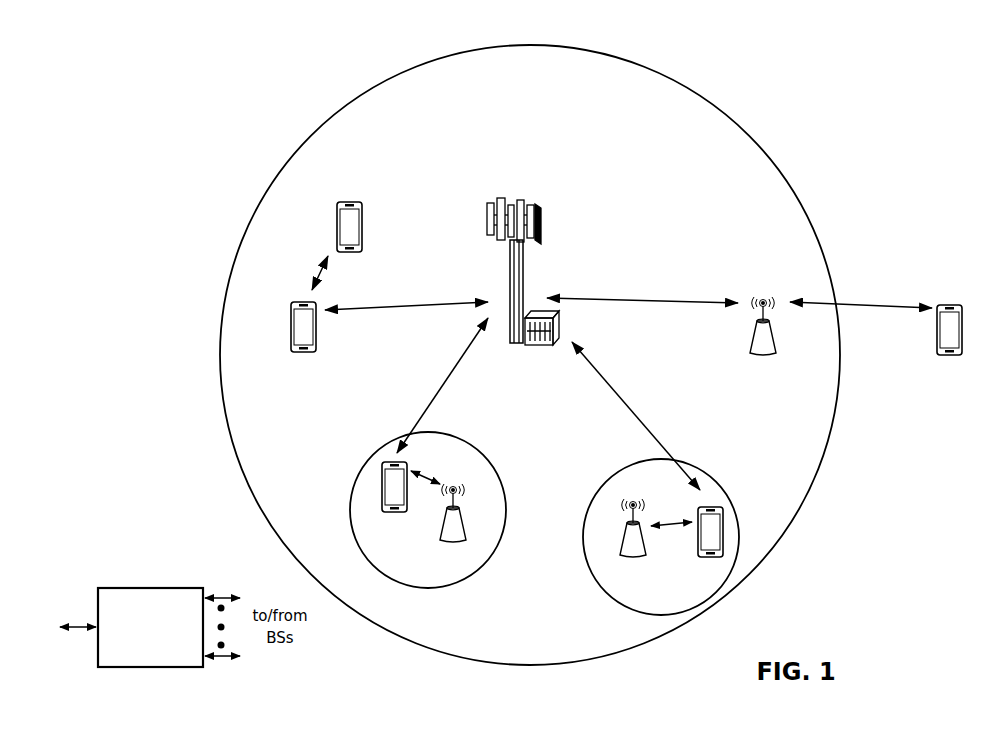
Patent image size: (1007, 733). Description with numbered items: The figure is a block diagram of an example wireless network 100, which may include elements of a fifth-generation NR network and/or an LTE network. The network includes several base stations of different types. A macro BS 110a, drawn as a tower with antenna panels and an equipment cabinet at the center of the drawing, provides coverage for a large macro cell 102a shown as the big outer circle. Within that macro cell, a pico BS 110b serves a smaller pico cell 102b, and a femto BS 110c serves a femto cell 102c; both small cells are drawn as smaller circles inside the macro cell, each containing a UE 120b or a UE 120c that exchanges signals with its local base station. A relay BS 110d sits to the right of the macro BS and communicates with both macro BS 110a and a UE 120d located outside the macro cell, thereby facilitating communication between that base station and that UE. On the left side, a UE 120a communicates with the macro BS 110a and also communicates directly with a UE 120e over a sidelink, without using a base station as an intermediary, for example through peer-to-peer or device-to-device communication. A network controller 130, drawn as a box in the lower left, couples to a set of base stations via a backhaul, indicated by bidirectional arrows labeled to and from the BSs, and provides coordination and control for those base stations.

The wireless network 100 is at (138, 41).
The macro cell 102a is at (738, 121).
The pico cell 102b is at (502, 463).
The femto cell 102c is at (598, 467).
The macro BS 110a is at (521, 192).
The pico BS 110b is at (474, 534).
The femto BS 110c is at (618, 542).
The relay BS 110d is at (765, 294).
The UE 120a is at (290, 325).
The UE 120b is at (384, 512).
The UE 120c is at (700, 557).
The UE 120d is at (960, 305).
The UE 120e is at (335, 214).
The network controller 130 is at (150, 588).